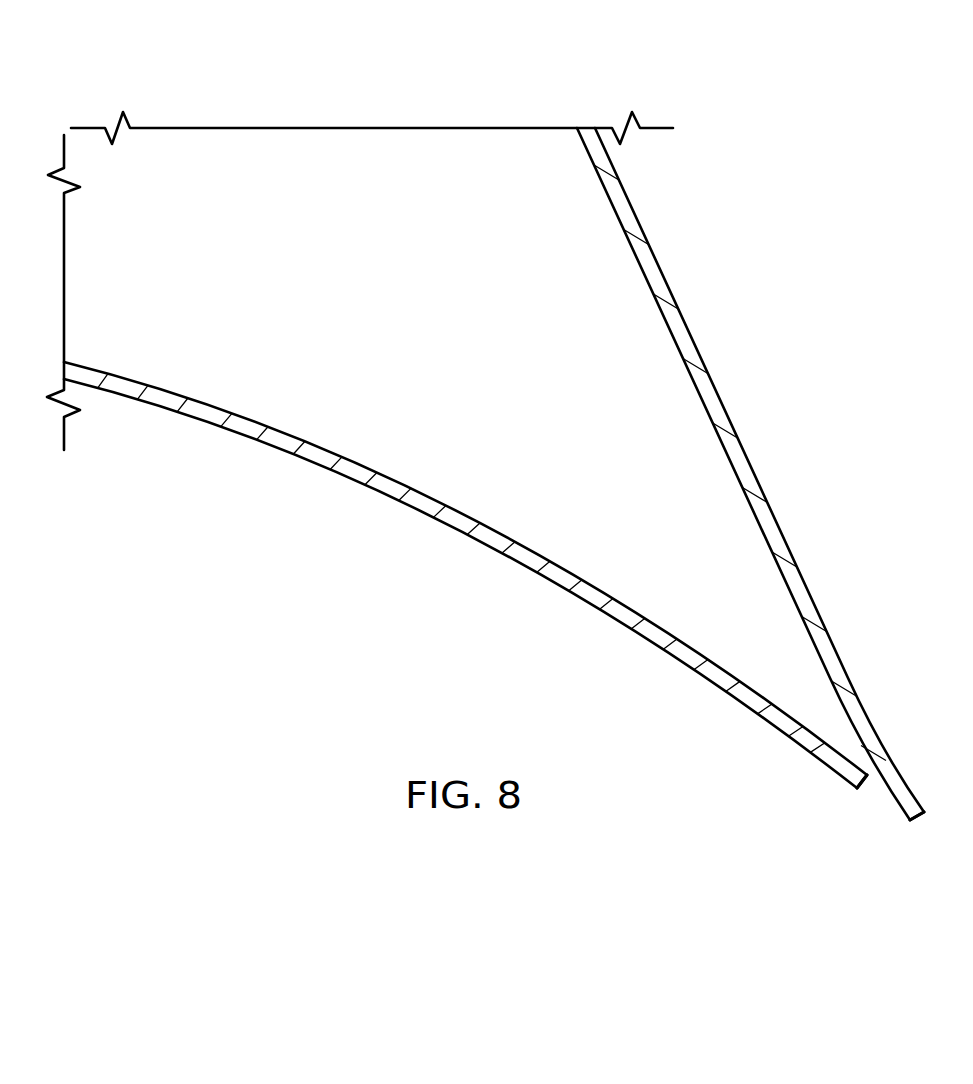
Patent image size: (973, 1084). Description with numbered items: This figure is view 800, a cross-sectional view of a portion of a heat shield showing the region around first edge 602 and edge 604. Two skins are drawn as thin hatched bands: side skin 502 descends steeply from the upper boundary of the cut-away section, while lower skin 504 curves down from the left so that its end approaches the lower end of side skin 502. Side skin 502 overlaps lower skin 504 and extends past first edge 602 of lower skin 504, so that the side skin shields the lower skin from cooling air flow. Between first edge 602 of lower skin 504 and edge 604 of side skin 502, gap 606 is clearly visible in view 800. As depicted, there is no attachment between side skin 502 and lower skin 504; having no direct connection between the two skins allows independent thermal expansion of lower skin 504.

The view 800 is at (226, 83).
The side skin 502 is at (842, 660).
The lower skin 504 is at (523, 565).
The first edge 602 is at (852, 785).
The edge 604 is at (918, 820).
The gap 606 is at (874, 786).